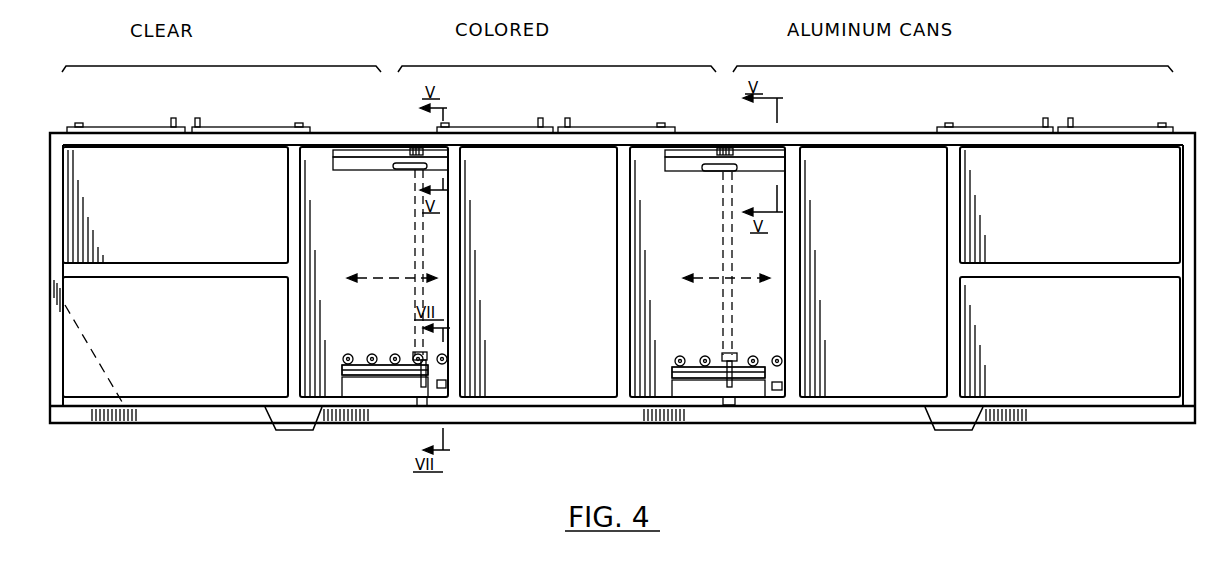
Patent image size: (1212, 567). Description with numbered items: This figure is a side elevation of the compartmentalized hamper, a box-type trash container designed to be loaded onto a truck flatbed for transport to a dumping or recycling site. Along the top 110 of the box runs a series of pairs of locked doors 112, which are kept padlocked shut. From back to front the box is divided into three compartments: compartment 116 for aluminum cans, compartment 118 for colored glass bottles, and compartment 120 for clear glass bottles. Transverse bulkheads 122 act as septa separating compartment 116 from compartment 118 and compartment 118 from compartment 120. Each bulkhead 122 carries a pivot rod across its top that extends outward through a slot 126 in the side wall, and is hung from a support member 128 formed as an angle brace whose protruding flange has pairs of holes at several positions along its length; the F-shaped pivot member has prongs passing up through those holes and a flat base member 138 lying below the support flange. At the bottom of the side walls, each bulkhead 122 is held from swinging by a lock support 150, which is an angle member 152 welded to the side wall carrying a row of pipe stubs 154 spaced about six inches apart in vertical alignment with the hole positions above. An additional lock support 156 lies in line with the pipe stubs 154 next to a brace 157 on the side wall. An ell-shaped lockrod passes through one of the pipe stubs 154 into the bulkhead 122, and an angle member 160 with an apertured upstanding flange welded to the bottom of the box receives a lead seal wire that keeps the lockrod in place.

The top 110 is at (840, 133).
The locked doors 112 is at (590, 130).
The compartment 116 is at (1058, 248).
The compartment 118 is at (674, 325).
The compartment 120 is at (218, 225).
The transverse bulkhead 122 is at (410, 251).
The slot 126 is at (400, 150).
The support member 128 is at (358, 162).
The flat base member 138 is at (405, 171).
The lock support 150 is at (387, 367).
The angle member 152 is at (342, 368).
The pipe stubs 154 is at (370, 353).
The additional lock support 156 is at (449, 357).
The brace 157 is at (457, 381).
The angle member 160 is at (362, 388).